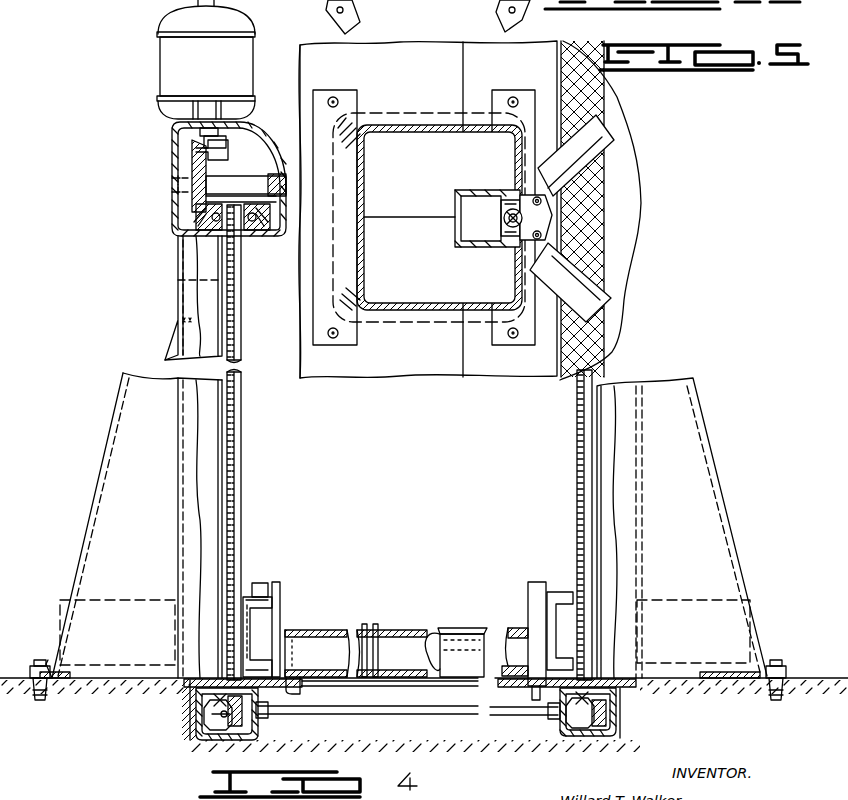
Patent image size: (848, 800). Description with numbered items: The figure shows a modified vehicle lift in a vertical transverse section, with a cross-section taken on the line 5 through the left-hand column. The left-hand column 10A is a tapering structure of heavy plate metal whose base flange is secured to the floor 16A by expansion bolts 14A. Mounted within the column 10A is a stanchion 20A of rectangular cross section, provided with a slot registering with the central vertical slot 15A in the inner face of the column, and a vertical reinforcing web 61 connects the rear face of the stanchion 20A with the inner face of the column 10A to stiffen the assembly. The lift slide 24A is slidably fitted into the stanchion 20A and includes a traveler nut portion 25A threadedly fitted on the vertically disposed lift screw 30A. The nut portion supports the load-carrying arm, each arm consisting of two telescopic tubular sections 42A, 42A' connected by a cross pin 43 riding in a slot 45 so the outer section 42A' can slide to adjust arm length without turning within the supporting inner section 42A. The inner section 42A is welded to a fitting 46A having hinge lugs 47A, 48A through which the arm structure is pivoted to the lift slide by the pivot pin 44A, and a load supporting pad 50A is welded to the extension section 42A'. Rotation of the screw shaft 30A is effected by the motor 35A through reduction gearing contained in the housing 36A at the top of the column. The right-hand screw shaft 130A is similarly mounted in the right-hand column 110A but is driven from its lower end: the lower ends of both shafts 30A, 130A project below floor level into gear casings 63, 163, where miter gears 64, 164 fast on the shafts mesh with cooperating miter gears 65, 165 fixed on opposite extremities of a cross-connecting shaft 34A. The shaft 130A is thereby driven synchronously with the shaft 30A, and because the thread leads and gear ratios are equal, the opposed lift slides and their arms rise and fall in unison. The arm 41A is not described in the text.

In FIG. 4, the section line 5— 5 is at (105, 570).
In FIG. 4, the motor 35A is at (225, 71).
In FIG. 4, the housing 36A is at (172, 150).
In FIG. 4, the lift screw 30A is at (242, 408).
In FIG. 5, the lift screw 30A is at (520, 219).
In FIG. 4, the column 10A is at (113, 441).
In FIG. 5, the column 10A is at (416, 120).
In FIG. 4, the vertical reinforcing web 61 is at (131, 605).
In FIG. 5, the vertical reinforcing web 61 is at (397, 220).
In FIG. 4, the floor 16A is at (21, 669).
In FIG. 4, the expansion bolt 14A is at (56, 662).
In FIG. 4, the hinge lug 47A is at (262, 592).
In FIG. 4, the traveler nut portion 25A is at (246, 597).
In FIG. 5, the traveler nut portion 25A is at (548, 215).
In FIG. 4, the pivot pin 44A is at (258, 622).
In FIG. 4, the inner arm section 42A is at (356, 648).
In FIG. 5, the inner arm section 42A is at (597, 282).
In FIG. 4, the slot 45 is at (366, 630).
In FIG. 4, the cross pin 43 is at (378, 635).
In FIG. 4, the fitting 46A is at (279, 657).
In FIG. 4, the outer arm section 42A' is at (442, 637).
In FIG. 4, the load supporting pad 50A is at (472, 627).
In FIG. 4, the hinge lug 48A is at (288, 687).
In FIG. 4, the right-hand screw shaft 130A is at (578, 431).
In FIG. 4, the right-hand column 110A is at (721, 487).
In FIG. 4, the gear casing 63 is at (259, 722).
In FIG. 4, the miter gear 64 is at (236, 736).
In FIG. 4, the miter gear 65 is at (206, 740).
In FIG. 4, the cross-connecting shaft 34A is at (367, 710).
In FIG. 4, the gear casing 163 is at (578, 741).
In FIG. 4, the miter gear 164 is at (562, 720).
In FIG. 4, the miter gear 165 is at (619, 717).
In FIG. 5, the lift slide 24A is at (482, 196).
In FIG. 5, the stanchion 20A is at (458, 206).
In FIG. 5, the central vertical slot 15A is at (501, 215).
In FIG. 5, the arm 41A is at (600, 142).